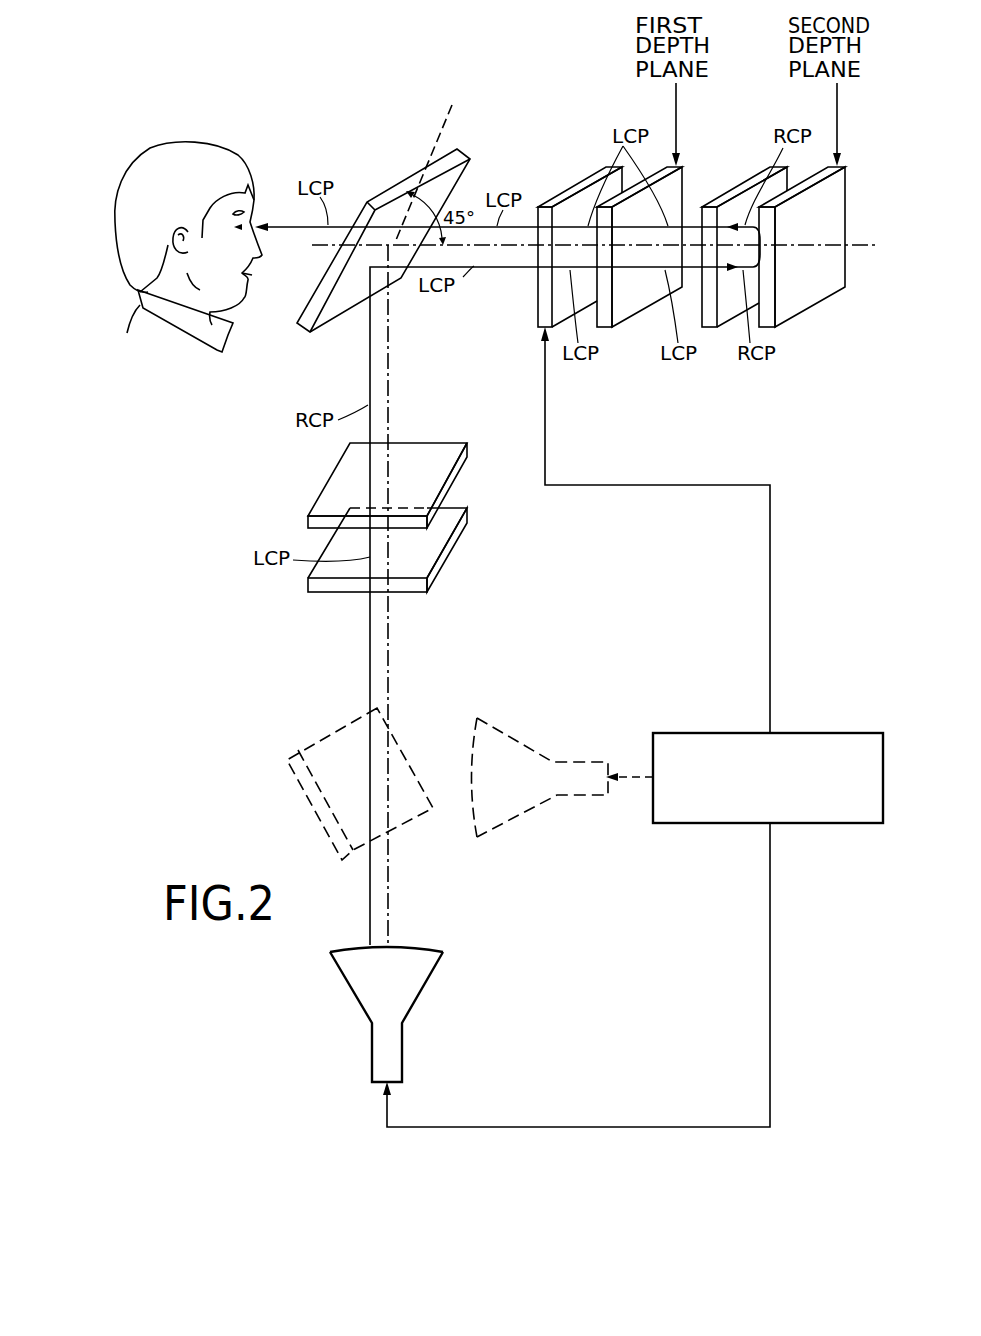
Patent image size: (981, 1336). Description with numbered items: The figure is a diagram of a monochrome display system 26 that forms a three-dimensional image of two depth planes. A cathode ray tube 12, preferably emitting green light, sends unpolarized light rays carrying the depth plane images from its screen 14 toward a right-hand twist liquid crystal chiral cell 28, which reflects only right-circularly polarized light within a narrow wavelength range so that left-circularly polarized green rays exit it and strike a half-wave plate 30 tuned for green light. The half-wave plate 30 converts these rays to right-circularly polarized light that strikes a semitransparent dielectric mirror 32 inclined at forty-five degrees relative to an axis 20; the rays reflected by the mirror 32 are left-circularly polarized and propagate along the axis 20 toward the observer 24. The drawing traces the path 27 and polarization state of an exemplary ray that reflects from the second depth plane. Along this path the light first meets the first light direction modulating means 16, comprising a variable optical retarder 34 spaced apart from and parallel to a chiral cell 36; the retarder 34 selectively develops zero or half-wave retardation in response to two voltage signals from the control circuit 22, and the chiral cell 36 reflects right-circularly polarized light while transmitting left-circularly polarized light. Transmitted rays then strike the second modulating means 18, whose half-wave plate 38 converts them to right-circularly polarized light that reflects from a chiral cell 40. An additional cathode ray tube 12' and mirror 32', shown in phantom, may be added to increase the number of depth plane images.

The cathode ray tube 12 is at (404, 996).
The additional cathode ray tube 12' is at (540, 777).
The screen 14 is at (413, 945).
The first light direction modulating means 16 is at (610, 282).
The second modulating means 18 is at (791, 282).
The axis 20 is at (868, 246).
The control circuit 22 is at (722, 733).
The observer 24 is at (237, 158).
The monochrome display system 26 is at (360, 1102).
The path 27 is at (518, 227).
The right-hand twist liquid crystal chiral cell 28 is at (435, 550).
The half-wave plate 30 is at (433, 452).
The semitransparent dielectric mirror 32 is at (398, 233).
The mirror 32' is at (359, 778).
The variable optical retarder 34 is at (609, 168).
The right-hand twist liquid crystal chiral cell 36 is at (630, 303).
The half-wave plate 38 is at (768, 168).
The right-hand twist liquid crystal chiral cell 40 is at (838, 185).